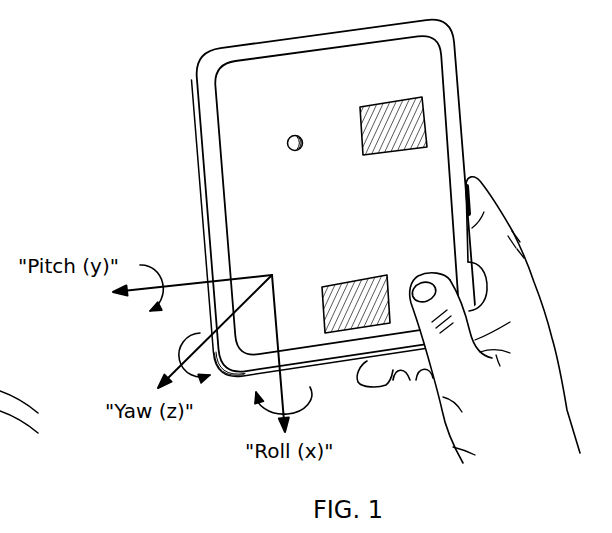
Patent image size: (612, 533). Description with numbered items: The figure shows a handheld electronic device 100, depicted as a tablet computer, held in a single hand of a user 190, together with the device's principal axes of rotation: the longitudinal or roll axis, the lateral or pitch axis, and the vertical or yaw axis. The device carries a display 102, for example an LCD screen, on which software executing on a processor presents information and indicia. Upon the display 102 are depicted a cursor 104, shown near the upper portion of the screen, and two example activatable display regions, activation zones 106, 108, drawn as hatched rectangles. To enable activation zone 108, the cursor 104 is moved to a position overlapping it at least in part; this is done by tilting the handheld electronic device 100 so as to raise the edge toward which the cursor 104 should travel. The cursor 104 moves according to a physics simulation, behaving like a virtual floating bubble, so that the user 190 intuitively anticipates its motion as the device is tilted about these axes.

The handheld electronic device 100 is at (472, 85).
The display 102 is at (243, 160).
The cursor 104 is at (277, 145).
The activation zone 106 is at (362, 287).
The activation zone 108 is at (363, 123).
The user 190 is at (498, 426).